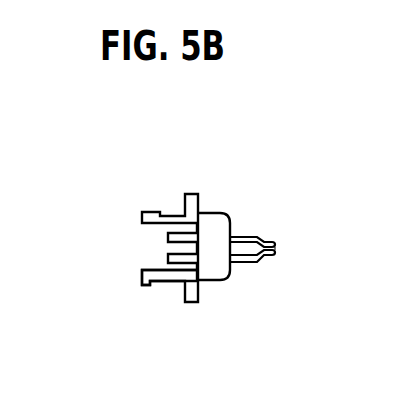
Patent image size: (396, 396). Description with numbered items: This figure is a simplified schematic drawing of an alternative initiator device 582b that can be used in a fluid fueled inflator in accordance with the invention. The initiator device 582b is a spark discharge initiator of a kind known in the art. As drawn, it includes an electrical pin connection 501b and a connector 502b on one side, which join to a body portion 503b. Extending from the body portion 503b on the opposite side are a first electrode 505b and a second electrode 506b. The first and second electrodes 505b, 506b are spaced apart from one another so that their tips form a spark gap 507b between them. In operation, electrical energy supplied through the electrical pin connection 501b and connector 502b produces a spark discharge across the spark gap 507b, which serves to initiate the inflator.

The electrical pin connection 501b is at (156, 247).
The connector 502b is at (167, 281).
The body portion 503b is at (217, 227).
The first electrode 505b is at (263, 238).
The second electrode 506b is at (263, 263).
The spark gap 507b is at (290, 251).
The initiator device 582b is at (265, 202).